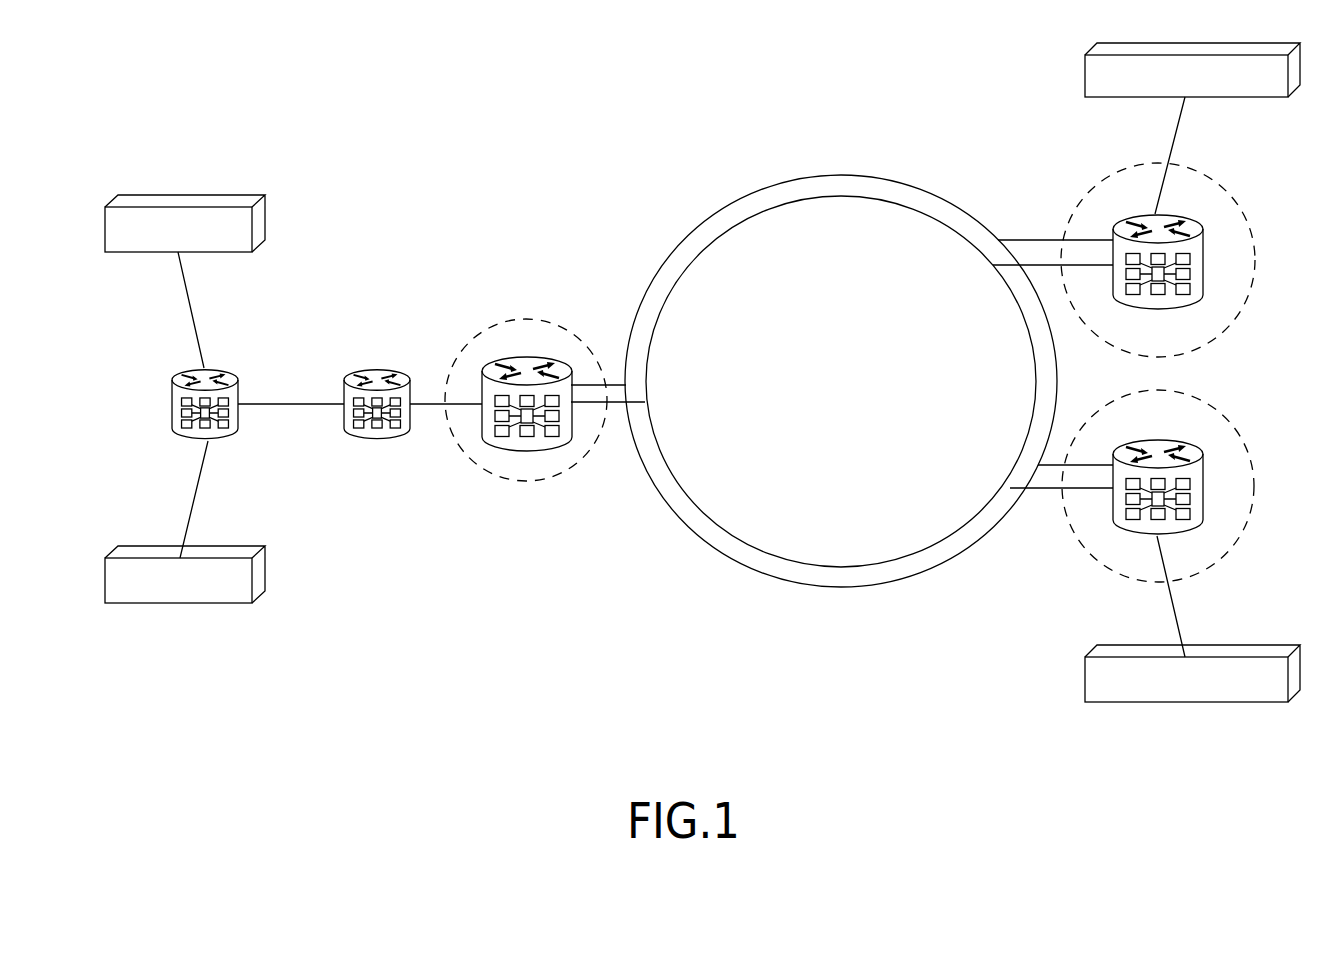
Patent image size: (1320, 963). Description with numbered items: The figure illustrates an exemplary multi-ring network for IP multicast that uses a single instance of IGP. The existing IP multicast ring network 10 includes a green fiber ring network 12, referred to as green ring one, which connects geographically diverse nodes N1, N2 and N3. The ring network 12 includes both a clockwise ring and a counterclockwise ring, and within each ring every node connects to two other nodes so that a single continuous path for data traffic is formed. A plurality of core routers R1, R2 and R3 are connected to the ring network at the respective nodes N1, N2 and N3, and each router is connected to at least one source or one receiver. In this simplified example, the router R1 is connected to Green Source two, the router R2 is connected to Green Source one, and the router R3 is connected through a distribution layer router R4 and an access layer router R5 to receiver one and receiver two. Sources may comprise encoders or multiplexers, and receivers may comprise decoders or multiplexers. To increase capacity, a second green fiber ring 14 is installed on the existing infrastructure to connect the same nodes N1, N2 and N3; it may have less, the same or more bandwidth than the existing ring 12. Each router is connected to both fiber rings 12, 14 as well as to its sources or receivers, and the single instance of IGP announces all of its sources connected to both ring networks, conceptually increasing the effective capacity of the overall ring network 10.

The IP multicast ring network 10 is at (526, 139).
The green fiber ring network 12 is at (705, 250).
The second green fiber ring 14 is at (722, 210).
The core router R1 is at (1153, 470).
The core router R2 is at (1154, 247).
The core router R3 is at (527, 389).
The distribution layer router R4 is at (377, 389).
The access layer router R5 is at (205, 389).
The node N1 is at (1160, 486).
The node N2 is at (1160, 260).
The node N3 is at (526, 396).